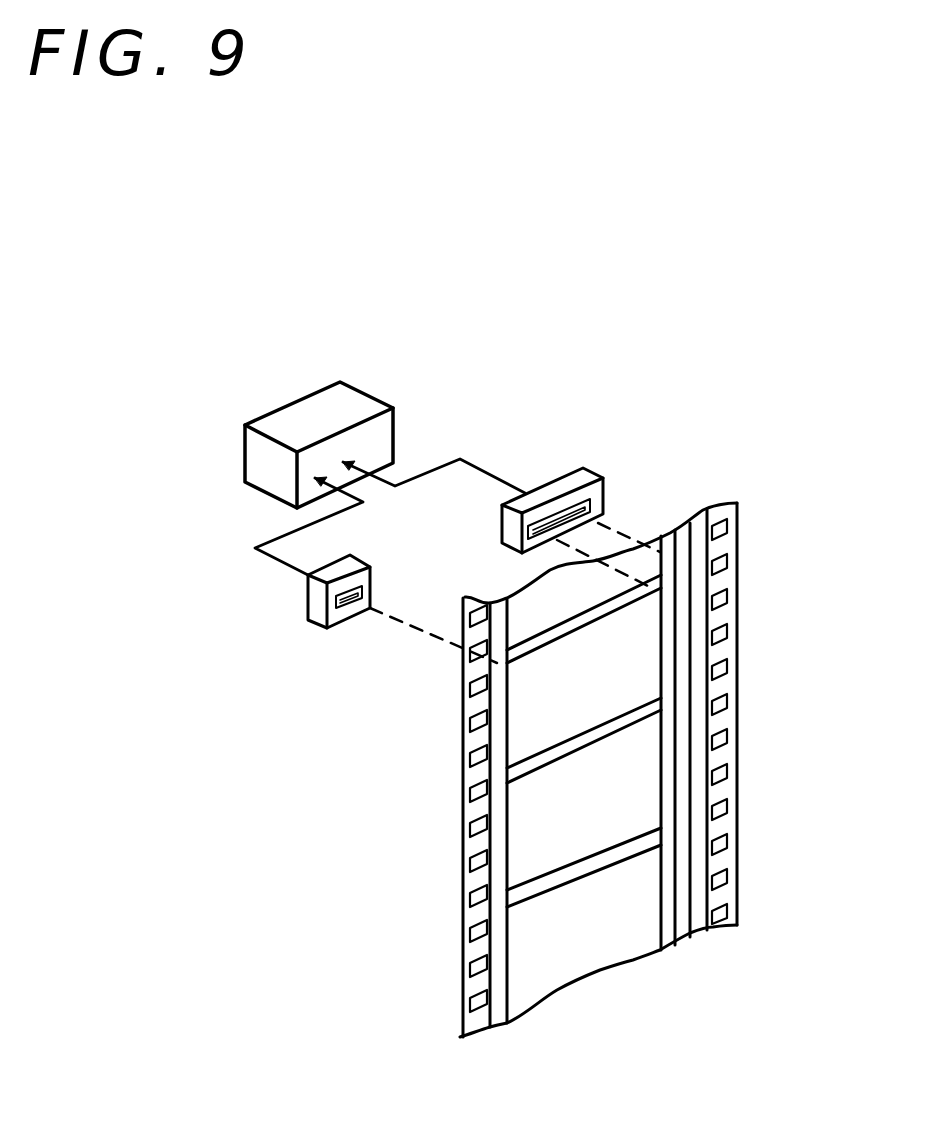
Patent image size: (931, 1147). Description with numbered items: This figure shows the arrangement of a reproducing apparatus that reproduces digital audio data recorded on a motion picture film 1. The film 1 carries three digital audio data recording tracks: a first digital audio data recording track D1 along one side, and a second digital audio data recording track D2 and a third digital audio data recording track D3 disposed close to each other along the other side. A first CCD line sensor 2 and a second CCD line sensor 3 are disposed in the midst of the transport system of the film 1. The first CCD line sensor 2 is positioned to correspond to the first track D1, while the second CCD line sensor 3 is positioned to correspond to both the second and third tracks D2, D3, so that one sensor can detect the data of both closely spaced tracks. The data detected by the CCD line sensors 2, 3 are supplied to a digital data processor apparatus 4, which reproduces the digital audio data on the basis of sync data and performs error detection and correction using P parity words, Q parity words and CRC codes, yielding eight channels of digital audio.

The motion picture film 1 is at (736, 693).
The first CCD line sensor 2 is at (312, 628).
The second CCD line sensor 3 is at (568, 480).
The digital data processor apparatus 4 is at (330, 403).
The first digital audio data recording track D1 is at (498, 1017).
The second digital audio data recording track D2 is at (663, 950).
The third digital audio data recording track D3 is at (697, 935).